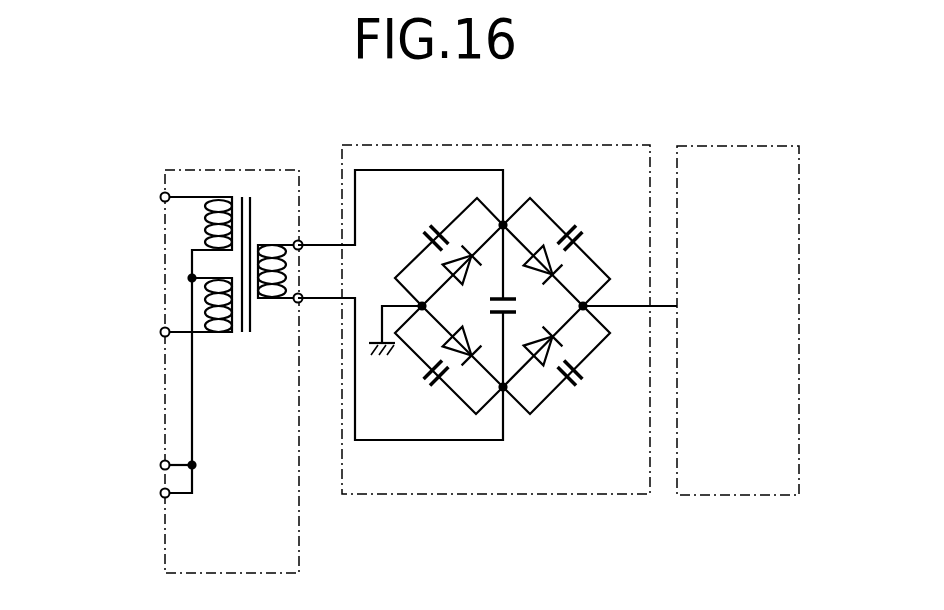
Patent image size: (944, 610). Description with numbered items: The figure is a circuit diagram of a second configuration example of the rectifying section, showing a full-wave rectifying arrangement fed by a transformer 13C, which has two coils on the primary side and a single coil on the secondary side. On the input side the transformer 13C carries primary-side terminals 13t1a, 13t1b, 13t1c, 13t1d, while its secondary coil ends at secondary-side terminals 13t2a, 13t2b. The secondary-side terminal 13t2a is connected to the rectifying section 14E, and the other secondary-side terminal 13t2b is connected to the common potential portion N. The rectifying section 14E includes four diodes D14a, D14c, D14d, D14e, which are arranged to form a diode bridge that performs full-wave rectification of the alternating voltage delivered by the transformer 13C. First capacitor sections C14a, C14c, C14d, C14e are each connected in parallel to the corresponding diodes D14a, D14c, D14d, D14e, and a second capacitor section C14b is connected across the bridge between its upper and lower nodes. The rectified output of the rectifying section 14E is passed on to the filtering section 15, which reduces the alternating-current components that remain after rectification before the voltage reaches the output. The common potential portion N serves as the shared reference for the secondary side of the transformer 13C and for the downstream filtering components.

The transformer 13C is at (218, 168).
The primary-side terminal 13t1a is at (161, 201).
The primary-side terminal 13t1b is at (161, 330).
The primary-side terminal 13t1c is at (161, 461).
The primary-side terminal 13t1d is at (161, 497).
The secondary-side terminal 13t2a is at (301, 241).
The secondary-side terminal 13t2b is at (295, 302).
The rectifying section 14E is at (417, 143).
The diode D14a is at (468, 244).
The diode D14c is at (471, 368).
The diode D14d is at (534, 247).
The diode D14e is at (535, 366).
The first capacitor section C14a is at (411, 227).
The second capacitor section C14b is at (509, 318).
The first capacitor section C14c is at (406, 388).
The first capacitor section C14d is at (599, 228).
The first capacitor section C14e is at (598, 389).
The common potential portion N is at (395, 346).
The filtering section 15 is at (705, 145).